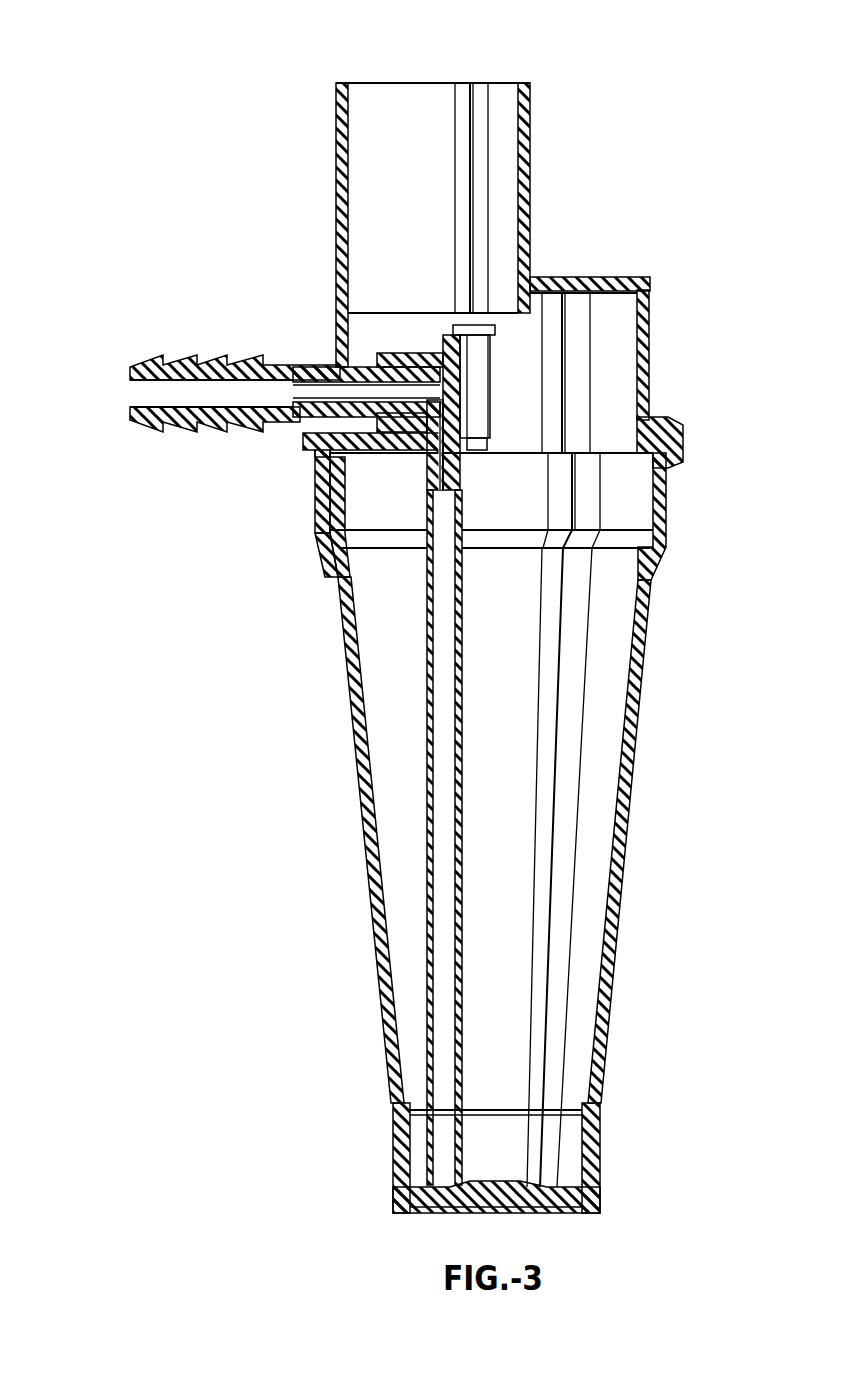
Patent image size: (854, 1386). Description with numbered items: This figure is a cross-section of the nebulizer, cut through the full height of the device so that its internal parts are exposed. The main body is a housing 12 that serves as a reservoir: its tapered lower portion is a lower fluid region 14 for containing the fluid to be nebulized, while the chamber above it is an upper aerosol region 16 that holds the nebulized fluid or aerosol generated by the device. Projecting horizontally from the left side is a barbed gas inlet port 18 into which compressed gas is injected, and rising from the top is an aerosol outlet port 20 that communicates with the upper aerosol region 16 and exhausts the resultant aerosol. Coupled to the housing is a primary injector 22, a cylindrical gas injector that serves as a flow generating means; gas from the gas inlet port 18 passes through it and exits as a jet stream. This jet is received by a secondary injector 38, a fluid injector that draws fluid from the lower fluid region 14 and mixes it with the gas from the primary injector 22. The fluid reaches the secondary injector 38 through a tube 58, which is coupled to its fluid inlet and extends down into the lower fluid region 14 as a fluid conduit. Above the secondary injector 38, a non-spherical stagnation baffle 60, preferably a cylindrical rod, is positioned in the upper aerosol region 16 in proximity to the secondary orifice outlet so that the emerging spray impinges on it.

The housing 12 is at (357, 745).
The lower fluid region 14 is at (583, 848).
The upper aerosol region 16 is at (615, 382).
The gas inlet port 18 is at (130, 390).
The aerosol outlet port 20 is at (510, 80).
The primary injector 22 is at (290, 388).
The secondary injector 38 is at (430, 335).
The tube 58 is at (425, 840).
The stagnation baffle 60 is at (493, 407).